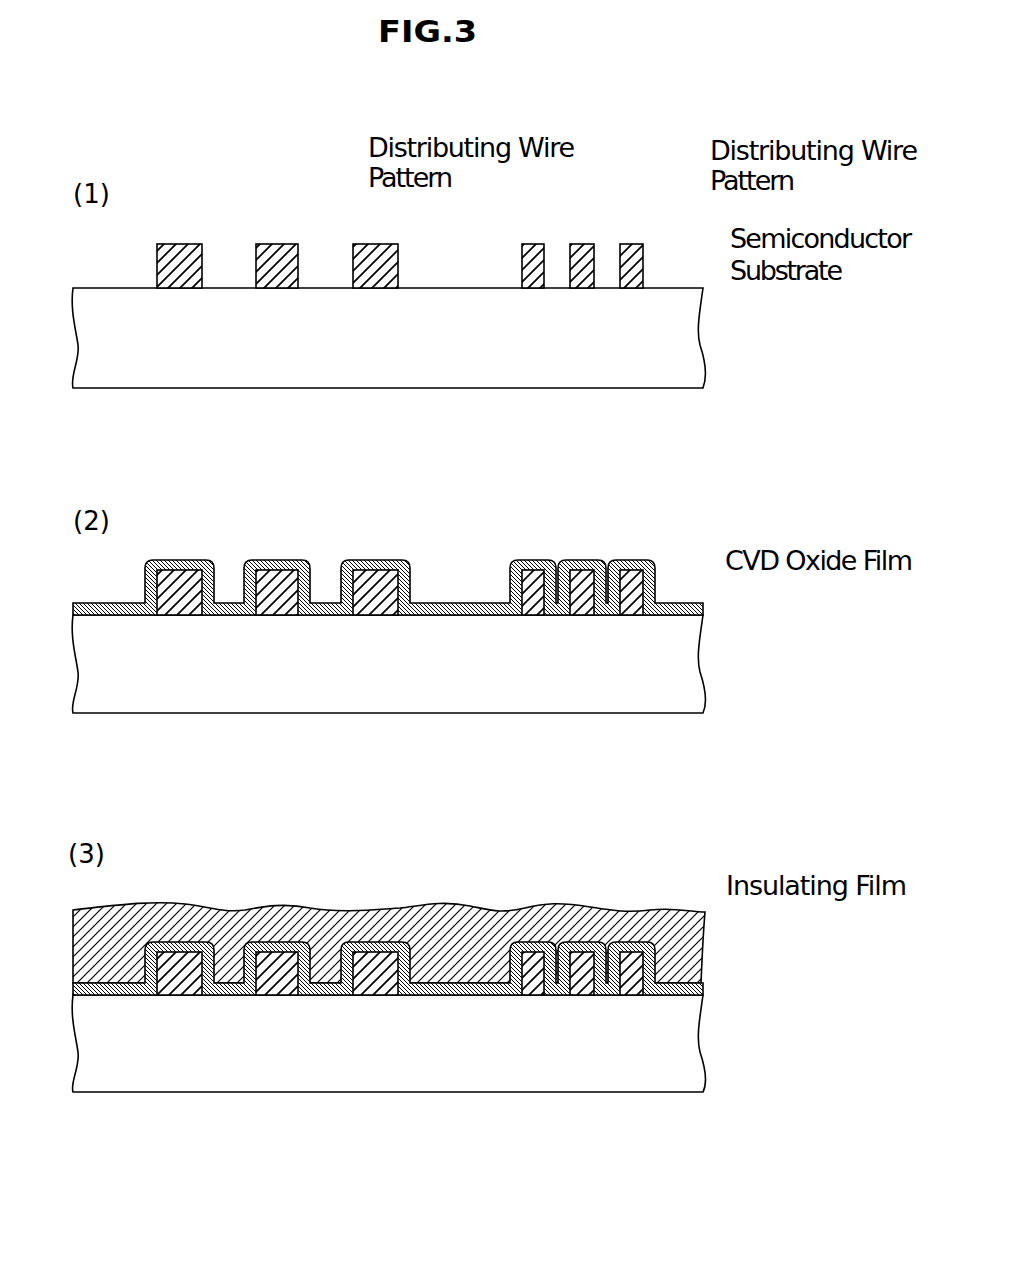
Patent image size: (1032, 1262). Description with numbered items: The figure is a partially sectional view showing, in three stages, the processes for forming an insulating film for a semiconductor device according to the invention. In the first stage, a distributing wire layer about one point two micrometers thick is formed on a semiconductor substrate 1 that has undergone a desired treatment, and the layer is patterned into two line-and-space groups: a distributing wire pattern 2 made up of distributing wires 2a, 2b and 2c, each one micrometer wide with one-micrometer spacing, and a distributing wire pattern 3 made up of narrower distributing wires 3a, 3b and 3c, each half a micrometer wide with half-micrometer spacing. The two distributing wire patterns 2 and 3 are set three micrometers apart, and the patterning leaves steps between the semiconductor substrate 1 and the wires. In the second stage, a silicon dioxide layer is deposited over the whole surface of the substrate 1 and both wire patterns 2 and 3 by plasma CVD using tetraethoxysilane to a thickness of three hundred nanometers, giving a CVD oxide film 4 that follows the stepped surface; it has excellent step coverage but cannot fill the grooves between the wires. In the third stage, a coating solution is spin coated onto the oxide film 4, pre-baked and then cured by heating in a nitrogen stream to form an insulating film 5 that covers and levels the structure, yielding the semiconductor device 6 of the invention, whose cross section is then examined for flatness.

The semiconductor substrate 1 is at (682, 340).
The distributing wire pattern 2 is at (277, 559).
The distributing wire 2a is at (190, 247).
The distributing wire 2b is at (272, 258).
The distributing wire 2c is at (375, 255).
The distributing wire pattern 3 is at (605, 558).
The distributing wire 3a is at (535, 253).
The distributing wire 3b is at (592, 252).
The distributing wire 3c is at (597, 588).
The CVD oxide film 4 is at (773, 582).
The insulating film 5 is at (778, 902).
The semiconductor device 6 is at (730, 841).